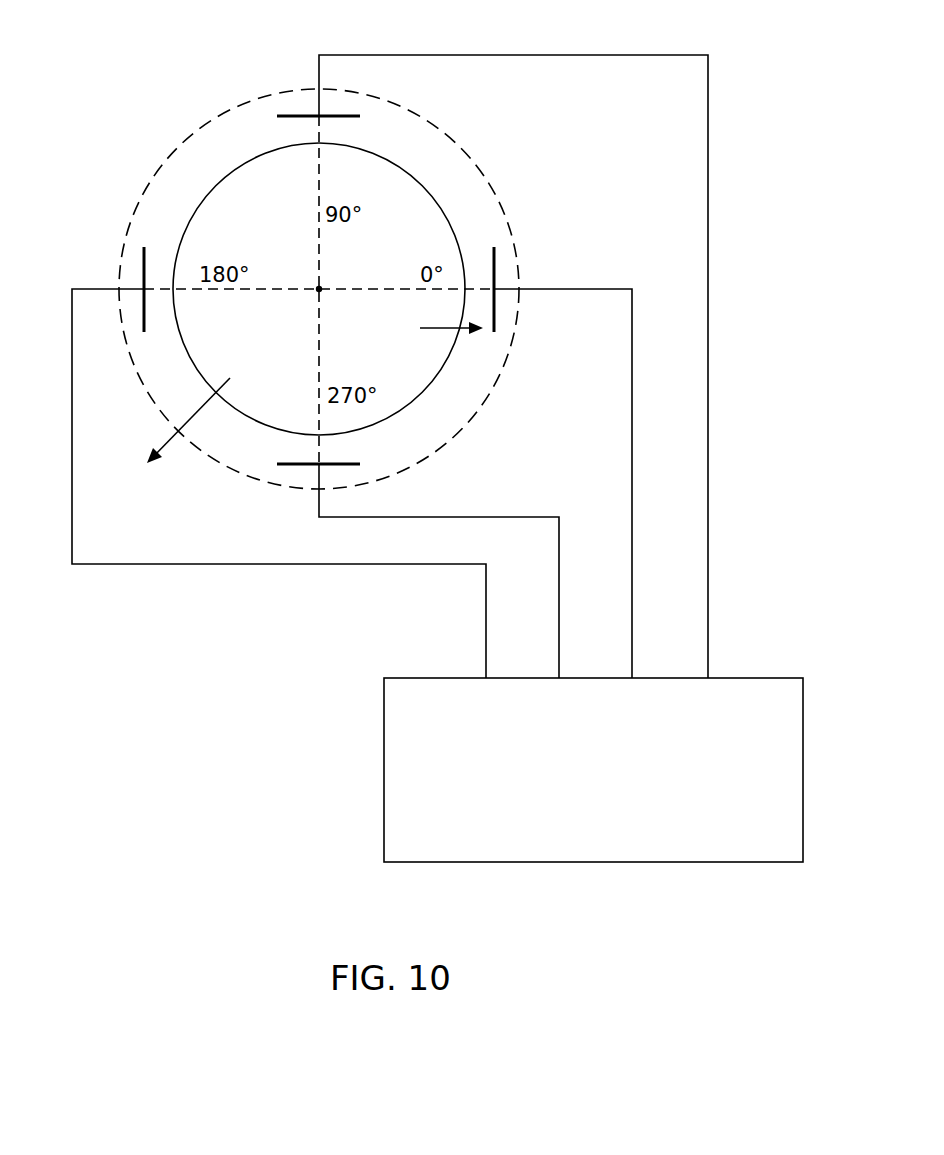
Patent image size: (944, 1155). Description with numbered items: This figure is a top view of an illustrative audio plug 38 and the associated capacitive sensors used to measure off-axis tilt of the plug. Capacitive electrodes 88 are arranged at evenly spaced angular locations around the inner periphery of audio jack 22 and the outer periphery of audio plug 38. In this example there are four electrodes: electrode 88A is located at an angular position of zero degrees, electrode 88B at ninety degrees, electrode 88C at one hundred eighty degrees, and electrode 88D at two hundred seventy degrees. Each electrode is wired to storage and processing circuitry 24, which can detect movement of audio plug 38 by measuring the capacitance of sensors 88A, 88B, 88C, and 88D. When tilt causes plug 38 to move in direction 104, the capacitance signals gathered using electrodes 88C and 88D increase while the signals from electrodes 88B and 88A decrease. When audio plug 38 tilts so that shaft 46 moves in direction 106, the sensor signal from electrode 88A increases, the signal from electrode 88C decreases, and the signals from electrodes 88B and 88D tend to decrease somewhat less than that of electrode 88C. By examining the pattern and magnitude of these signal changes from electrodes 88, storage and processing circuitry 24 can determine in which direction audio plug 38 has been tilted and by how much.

The capacitive electrodes 88 is at (272, 82).
The audio jack 22 is at (185, 139).
The audio plug 38 is at (450, 188).
The shaft 46 is at (455, 227).
The electrode 88A is at (496, 260).
The electrode 88B is at (350, 117).
The electrode 88C is at (143, 260).
The electrode 88D is at (297, 467).
The direction 104 is at (167, 446).
The direction 106 is at (465, 332).
The storage and processing circuitry 24 is at (763, 678).